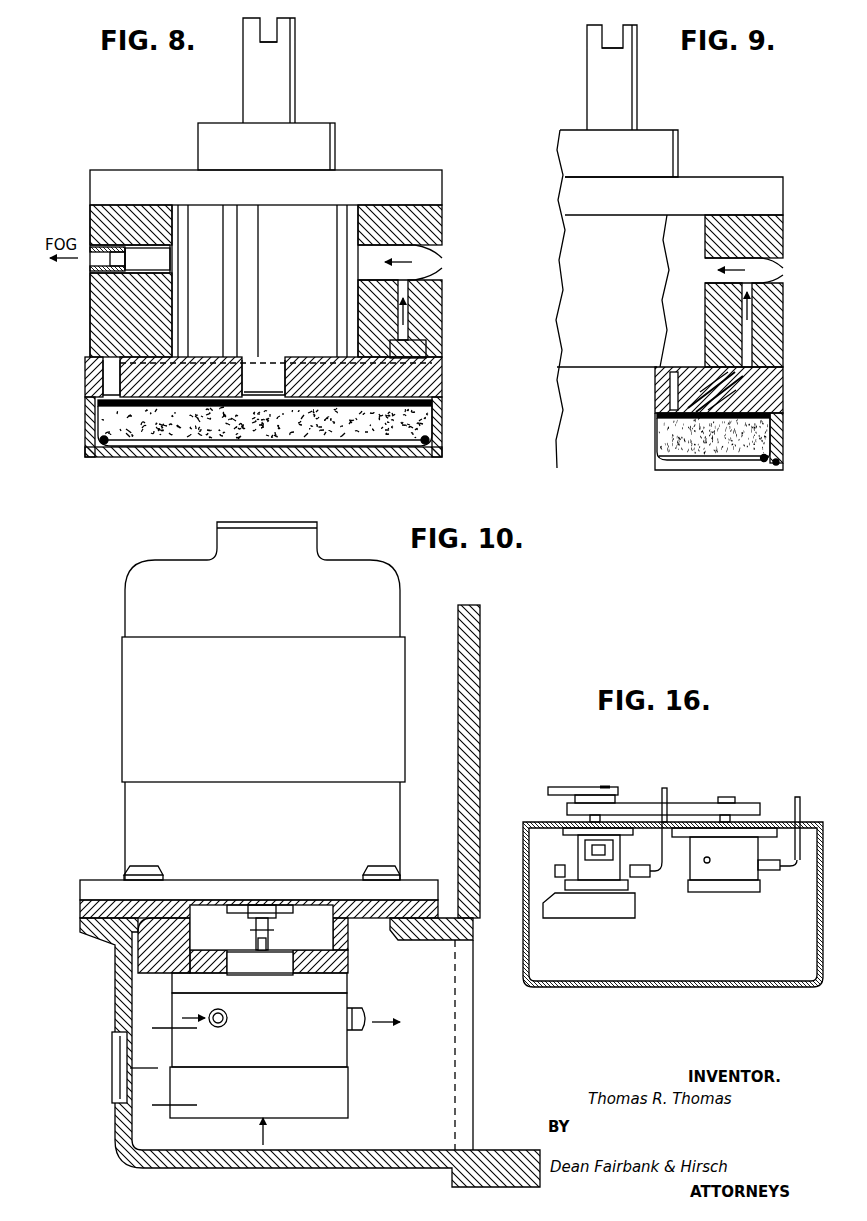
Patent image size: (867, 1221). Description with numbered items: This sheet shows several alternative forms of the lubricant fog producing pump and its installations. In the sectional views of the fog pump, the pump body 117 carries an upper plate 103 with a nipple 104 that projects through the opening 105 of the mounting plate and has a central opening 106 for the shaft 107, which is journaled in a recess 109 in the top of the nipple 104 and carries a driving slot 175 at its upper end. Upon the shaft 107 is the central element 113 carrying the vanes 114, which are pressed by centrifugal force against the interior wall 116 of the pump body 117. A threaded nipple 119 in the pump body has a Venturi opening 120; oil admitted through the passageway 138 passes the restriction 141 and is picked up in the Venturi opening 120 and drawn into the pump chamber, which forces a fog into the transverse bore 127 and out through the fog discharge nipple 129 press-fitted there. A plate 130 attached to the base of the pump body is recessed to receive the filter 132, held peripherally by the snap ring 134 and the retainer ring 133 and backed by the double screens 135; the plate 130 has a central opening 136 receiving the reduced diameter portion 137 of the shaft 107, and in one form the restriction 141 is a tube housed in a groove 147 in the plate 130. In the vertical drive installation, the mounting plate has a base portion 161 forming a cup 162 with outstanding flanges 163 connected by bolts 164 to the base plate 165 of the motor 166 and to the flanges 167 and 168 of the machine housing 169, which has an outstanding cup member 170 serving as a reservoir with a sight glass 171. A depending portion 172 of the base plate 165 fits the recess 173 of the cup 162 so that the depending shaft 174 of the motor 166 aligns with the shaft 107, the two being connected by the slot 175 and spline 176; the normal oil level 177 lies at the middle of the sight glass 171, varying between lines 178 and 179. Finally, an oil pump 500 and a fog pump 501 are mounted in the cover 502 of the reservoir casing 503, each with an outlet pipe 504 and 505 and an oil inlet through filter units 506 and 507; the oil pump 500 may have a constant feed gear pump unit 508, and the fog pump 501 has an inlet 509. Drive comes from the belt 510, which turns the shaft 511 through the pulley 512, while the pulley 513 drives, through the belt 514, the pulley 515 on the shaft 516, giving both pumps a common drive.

In FIG. 8, the upper plate 103 is at (442, 190).
In FIG. 9, the upper plate 103 is at (575, 200).
In FIG. 10, the upper plate 103 is at (350, 983).
In FIG. 8, the nipple 104 is at (335, 145).
In FIG. 9, the nipple 104 is at (678, 145).
In FIG. 10, the nipple 104 is at (284, 968).
In FIG. 10, the opening 105 is at (80, 915).
In FIG. 9, the central opening 106 is at (742, 390).
In FIG. 8, the shaft 107 is at (290, 85).
In FIG. 9, the shaft 107 is at (637, 87).
In FIG. 10, the shaft 107 is at (270, 946).
In FIG. 8, the recess 109 is at (408, 300).
In FIG. 9, the recess 109 is at (752, 322).
In FIG. 8, the central element 113 is at (291, 216).
In FIG. 8, the vanes 114 is at (247, 270).
In FIG. 8, the interior wall 116 is at (365, 230).
In FIG. 8, the pump body 117 is at (100, 328).
In FIG. 9, the pump body 117 is at (557, 315).
In FIG. 10, the pump body 117 is at (335, 1052).
In FIG. 10, the threaded nipple 119 is at (228, 1014).
In FIG. 8, the Venturi opening 120 is at (442, 262).
In FIG. 9, the Venturi opening 120 is at (783, 262).
In FIG. 8, the transverse bore 127 is at (148, 250).
In FIG. 8, the fog discharge nipple 129 is at (90, 270).
In FIG. 10, the fog discharge nipple 129 is at (366, 1013).
In FIG. 8, the plate 130 is at (442, 415).
In FIG. 9, the plate 130 is at (768, 405).
In FIG. 10, the plate 130 is at (340, 1092).
In FIG. 8, the filter 132 is at (266, 432).
In FIG. 9, the filter 132 is at (726, 452).
In FIG. 8, the retainer ring 133 is at (421, 448).
In FIG. 9, the retainer ring 133 is at (778, 470).
In FIG. 8, the snap ring 134 is at (105, 450).
In FIG. 9, the snap ring 134 is at (766, 462).
In FIG. 8, the double screens 135 is at (190, 430).
In FIG. 9, the double screens 135 is at (660, 440).
In FIG. 8, the central opening 136 is at (240, 372).
In FIG. 8, the reduced diameter portion 137 is at (262, 372).
In FIG. 8, the passageway 138 is at (103, 395).
In FIG. 8, the restriction 141 is at (430, 372).
In FIG. 9, the restriction 141 is at (680, 450).
In FIG. 9, the groove 147 is at (675, 400).
In FIG. 10, the base portion 161 is at (185, 968).
In FIG. 10, the cup 162 is at (178, 930).
In FIG. 10, the outstanding flanges 163 is at (430, 912).
In FIG. 10, the bolts 164 is at (130, 866).
In FIG. 10, the base plate 165 is at (438, 890).
In FIG. 10, the motor 166 is at (122, 735).
In FIG. 10, the flange 167 is at (95, 932).
In FIG. 10, the flange 168 is at (431, 942).
In FIG. 10, the machine housing 169 is at (475, 780).
In FIG. 10, the cup member 170 is at (118, 1128).
In FIG. 10, the sight glass 171 is at (112, 1047).
In FIG. 10, the depending portion 172 is at (212, 905).
In FIG. 10, the recess 173 is at (345, 900).
In FIG. 10, the depending shaft 174 is at (260, 905).
In FIG. 8, the driving slot 175 is at (277, 37).
In FIG. 9, the driving slot 175 is at (587, 38).
In FIG. 10, the driving slot 175 is at (246, 935).
In FIG. 10, the spline 176 is at (270, 933).
In FIG. 10, the normal oil level 177 is at (148, 1068).
In FIG. 10, the oil level line 178 is at (188, 1028).
In FIG. 10, the oil level line 179 is at (185, 1105).
In FIG. 16, the oil pump 500 is at (600, 875).
In FIG. 16, the fog pump 501 is at (706, 885).
In FIG. 16, the cover 502 is at (545, 826).
In FIG. 16, the reservoir casing 503 is at (616, 987).
In FIG. 16, the outlet pipe 504 is at (668, 790).
In FIG. 16, the outlet pipe 505 is at (800, 797).
In FIG. 16, the filter unit 506 is at (566, 908).
In FIG. 16, the filter unit 507 is at (760, 885).
In FIG. 16, the gear pump unit 508 is at (614, 885).
In FIG. 16, the inlet 509 is at (704, 862).
In FIG. 16, the belt 510 is at (570, 787).
In FIG. 16, the shaft 511 is at (595, 795).
In FIG. 16, the pulley 512 is at (616, 790).
In FIG. 16, the pulley 513 is at (567, 808).
In FIG. 16, the belt 514 is at (650, 803).
In FIG. 16, the pulley 515 is at (758, 803).
In FIG. 16, the shaft 516 is at (728, 797).